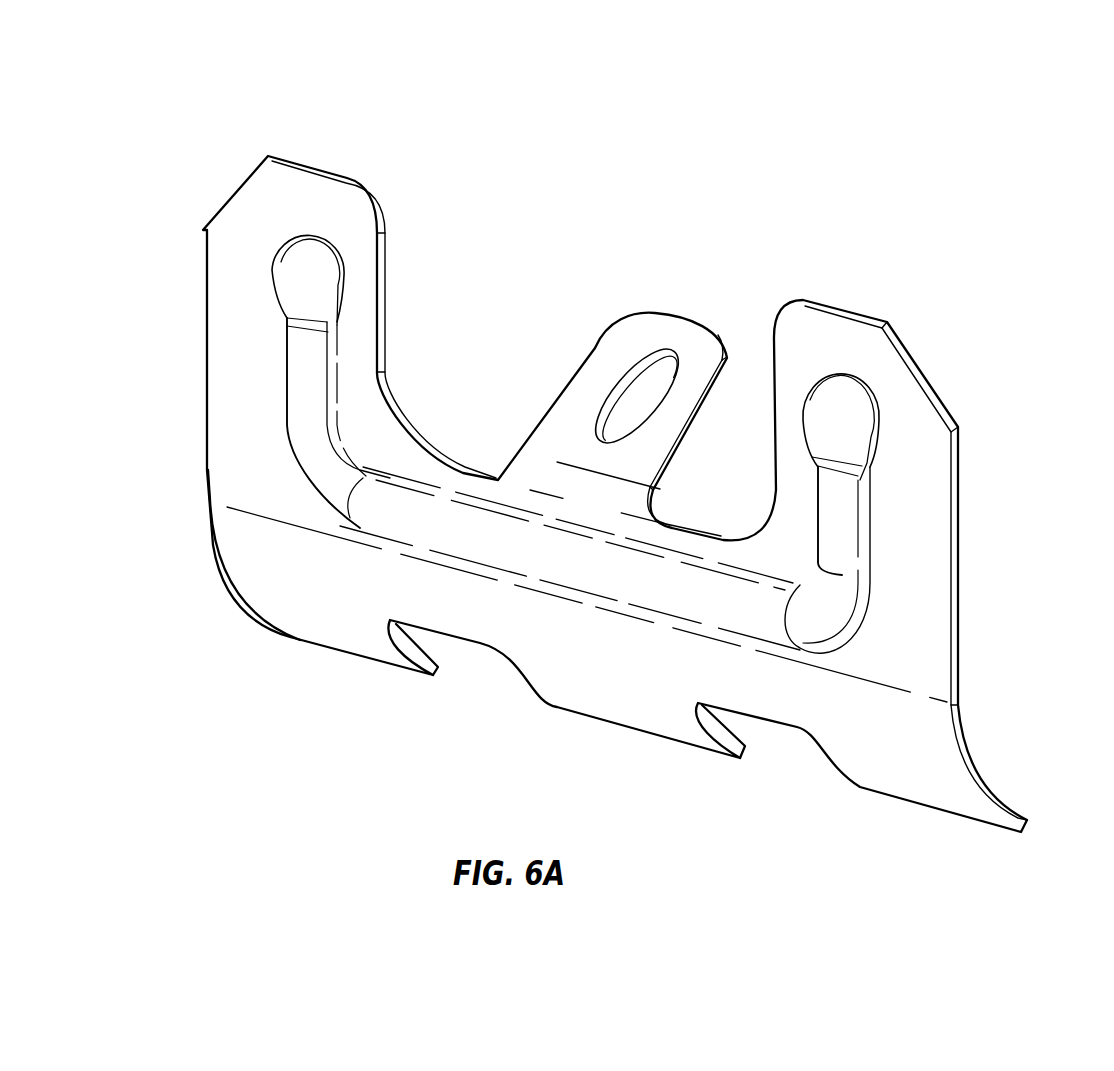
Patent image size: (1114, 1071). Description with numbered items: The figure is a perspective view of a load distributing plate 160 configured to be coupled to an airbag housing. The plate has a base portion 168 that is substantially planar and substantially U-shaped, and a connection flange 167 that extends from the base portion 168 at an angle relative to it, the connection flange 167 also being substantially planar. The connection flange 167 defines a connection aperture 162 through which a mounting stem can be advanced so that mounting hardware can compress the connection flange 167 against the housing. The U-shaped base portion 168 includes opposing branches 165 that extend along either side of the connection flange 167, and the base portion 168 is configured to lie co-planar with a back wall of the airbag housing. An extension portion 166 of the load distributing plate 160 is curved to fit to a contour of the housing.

The load distributing plate 160 is at (484, 154).
The connection aperture 162 is at (639, 400).
The opposing branches 165 is at (228, 296).
The extension portion 166 is at (942, 782).
The connection flange 167 is at (697, 345).
The base portion 168 is at (242, 463).